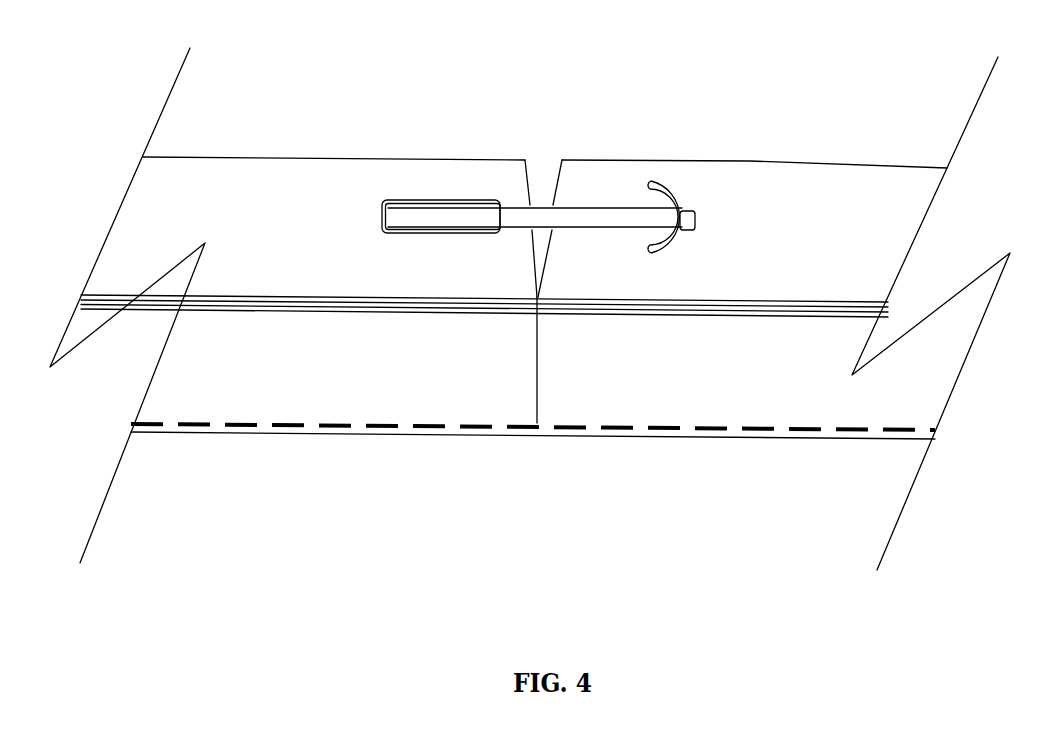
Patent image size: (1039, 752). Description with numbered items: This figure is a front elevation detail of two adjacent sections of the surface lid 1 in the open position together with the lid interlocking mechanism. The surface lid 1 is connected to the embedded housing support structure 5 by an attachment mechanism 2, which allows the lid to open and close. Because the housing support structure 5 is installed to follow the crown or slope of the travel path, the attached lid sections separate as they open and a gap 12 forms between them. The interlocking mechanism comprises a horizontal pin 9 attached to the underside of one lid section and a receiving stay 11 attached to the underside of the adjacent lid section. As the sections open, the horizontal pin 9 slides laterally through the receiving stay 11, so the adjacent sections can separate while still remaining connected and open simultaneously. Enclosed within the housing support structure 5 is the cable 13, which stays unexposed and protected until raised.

The surface lid 1 is at (317, 157).
The attachment mechanism 2 is at (313, 297).
The housing support structure 5 is at (400, 370).
The horizontal pin 9 is at (475, 218).
The receiving stay 11 is at (670, 187).
The gap 12 is at (538, 187).
The cable 13 is at (788, 438).